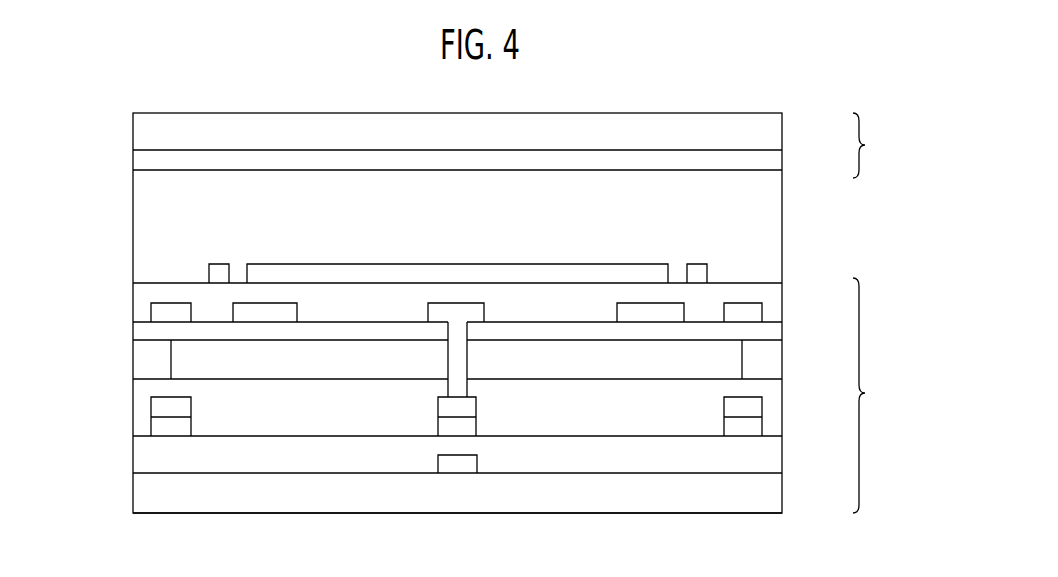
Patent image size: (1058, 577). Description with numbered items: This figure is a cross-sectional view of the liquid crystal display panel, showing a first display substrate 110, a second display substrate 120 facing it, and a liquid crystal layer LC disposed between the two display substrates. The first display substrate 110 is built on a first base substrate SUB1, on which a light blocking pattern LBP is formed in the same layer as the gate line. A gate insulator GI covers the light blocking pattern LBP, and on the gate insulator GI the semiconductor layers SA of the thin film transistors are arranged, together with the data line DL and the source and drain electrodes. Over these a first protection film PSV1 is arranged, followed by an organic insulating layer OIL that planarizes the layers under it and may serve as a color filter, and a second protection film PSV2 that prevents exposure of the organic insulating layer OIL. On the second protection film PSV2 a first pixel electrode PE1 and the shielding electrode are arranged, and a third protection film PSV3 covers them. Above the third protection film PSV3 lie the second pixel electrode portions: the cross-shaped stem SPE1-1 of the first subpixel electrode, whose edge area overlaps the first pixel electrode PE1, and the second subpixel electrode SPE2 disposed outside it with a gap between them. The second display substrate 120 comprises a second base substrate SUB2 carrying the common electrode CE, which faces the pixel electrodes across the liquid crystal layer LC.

The second base substrate SUB2 is at (773, 126).
The common electrode CE is at (773, 160).
The second display substrate 120 is at (876, 145).
The liquid crystal layer LC is at (773, 218).
The third protection film PSV3 is at (773, 298).
The second protection film PSV2 is at (773, 332).
The organic insulating layer OIL is at (773, 364).
The first protection film PSV1 is at (773, 403).
The first display substrate 110 is at (876, 395).
The gate insulator GI is at (773, 457).
The first base substrate SUB1 is at (773, 494).
The second subpixel electrode SPE2 is at (218, 272).
The cross-shaped stem SPE1-1 is at (405, 272).
The first pixel electrode PE1 is at (268, 310).
The data line DL is at (152, 407).
The semiconductor layer SA is at (172, 427).
The light blocking pattern LBP is at (459, 465).